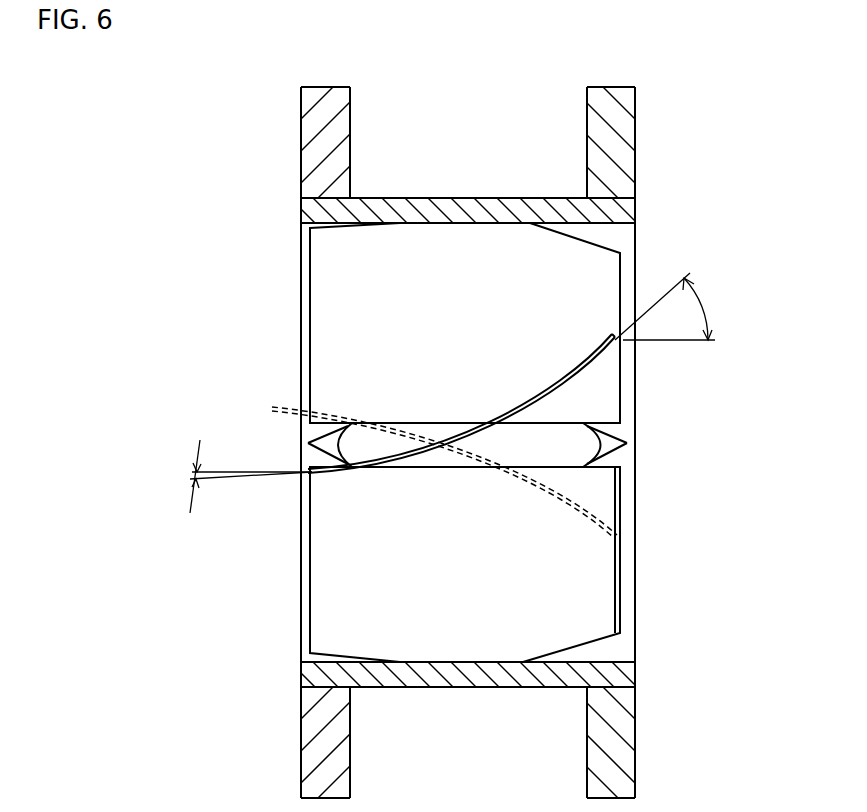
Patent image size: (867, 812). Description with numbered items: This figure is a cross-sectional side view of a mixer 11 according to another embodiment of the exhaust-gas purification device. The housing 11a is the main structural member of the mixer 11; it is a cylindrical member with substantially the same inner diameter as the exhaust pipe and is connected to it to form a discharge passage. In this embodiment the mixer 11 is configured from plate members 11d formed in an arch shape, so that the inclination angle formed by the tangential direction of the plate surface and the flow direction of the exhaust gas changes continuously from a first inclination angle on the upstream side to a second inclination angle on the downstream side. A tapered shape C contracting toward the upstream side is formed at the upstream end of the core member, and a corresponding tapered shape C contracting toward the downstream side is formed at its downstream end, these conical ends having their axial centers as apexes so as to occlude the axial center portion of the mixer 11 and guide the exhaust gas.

The mixer 11 is at (254, 76).
The housing 11a is at (460, 205).
The plate member 11d is at (315, 312).
The tapered shape C is at (305, 443).